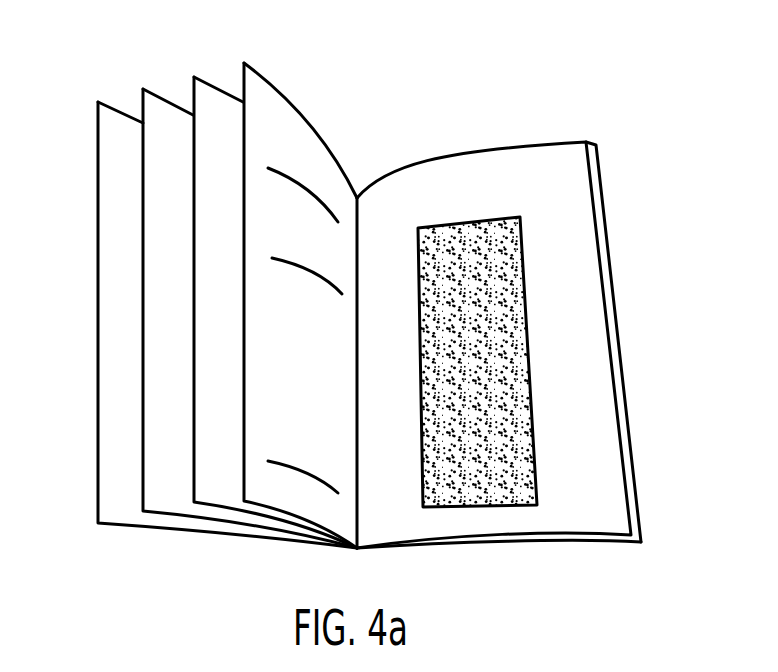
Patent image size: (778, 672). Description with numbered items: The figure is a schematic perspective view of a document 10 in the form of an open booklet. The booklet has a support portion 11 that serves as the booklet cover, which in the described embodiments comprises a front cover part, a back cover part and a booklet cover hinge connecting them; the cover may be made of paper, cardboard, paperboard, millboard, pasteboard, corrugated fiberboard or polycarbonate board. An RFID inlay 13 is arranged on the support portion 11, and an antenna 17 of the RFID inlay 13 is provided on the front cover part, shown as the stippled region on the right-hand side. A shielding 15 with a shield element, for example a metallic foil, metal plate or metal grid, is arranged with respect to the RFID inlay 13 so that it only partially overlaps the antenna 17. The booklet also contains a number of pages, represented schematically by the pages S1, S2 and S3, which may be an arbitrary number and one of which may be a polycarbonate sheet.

The document 10 is at (380, 309).
The support portion 11 is at (596, 549).
The RFID inlay 13 is at (576, 247).
The shielding 15 is at (630, 412).
The antenna 17 is at (493, 218).
The page S1 is at (302, 138).
The page S2 is at (220, 105).
The page S3 is at (170, 117).